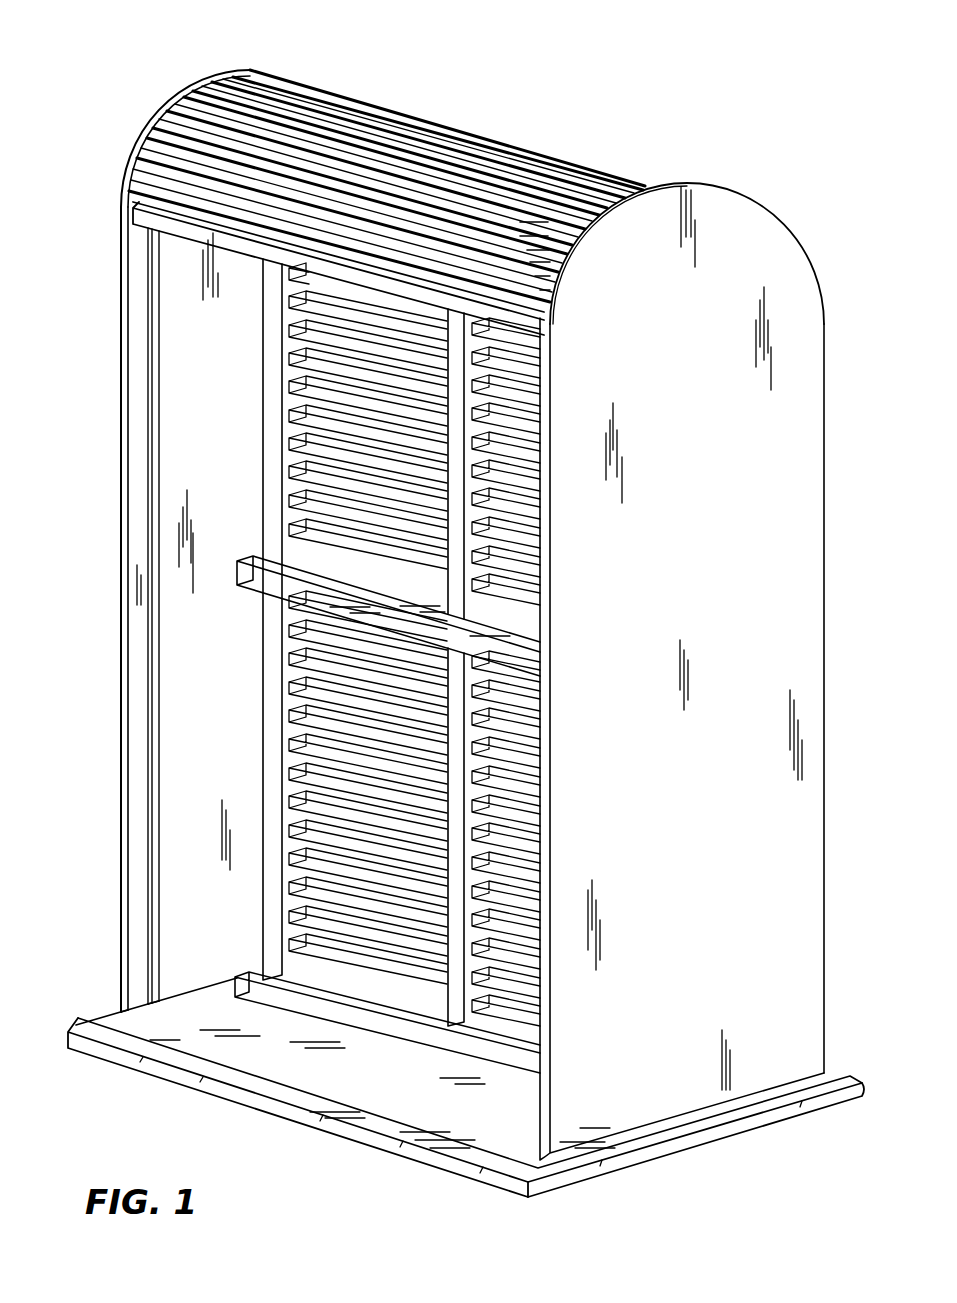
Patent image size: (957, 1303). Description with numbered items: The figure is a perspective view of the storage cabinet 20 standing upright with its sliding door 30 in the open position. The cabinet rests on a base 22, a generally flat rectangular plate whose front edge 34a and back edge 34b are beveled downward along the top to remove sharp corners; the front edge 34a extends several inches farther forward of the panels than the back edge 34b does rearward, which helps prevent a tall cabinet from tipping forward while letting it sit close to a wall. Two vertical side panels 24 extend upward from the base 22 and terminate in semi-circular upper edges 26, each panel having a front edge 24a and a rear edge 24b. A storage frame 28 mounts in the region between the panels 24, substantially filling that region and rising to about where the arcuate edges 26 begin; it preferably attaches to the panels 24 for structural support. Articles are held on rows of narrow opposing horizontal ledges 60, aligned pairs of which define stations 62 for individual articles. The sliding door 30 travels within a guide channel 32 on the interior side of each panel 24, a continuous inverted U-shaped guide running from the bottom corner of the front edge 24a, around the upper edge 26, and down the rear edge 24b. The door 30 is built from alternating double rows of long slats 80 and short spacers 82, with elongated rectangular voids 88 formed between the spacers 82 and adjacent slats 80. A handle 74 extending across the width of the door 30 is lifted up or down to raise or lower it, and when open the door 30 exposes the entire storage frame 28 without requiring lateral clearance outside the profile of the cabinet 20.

The storage cabinet 20 is at (628, 116).
The base 22 is at (678, 1140).
The side panel 24 is at (750, 490).
The front edge 24a is at (126, 593).
The rear edge 24b is at (827, 387).
The semi-circular upper edge 26 is at (231, 68).
The storage frame 28 is at (230, 562).
The sliding door 30 is at (463, 118).
The guide channel 32 is at (152, 656).
The front edge of base 34a is at (240, 1093).
The back edge of base 34b is at (868, 1097).
The horizontal ledge 60 is at (307, 712).
The station 62 is at (279, 739).
The handle 74 is at (178, 238).
The long slat 80 is at (193, 118).
The spacer 82 is at (172, 129).
The rectangular void 88 is at (552, 277).